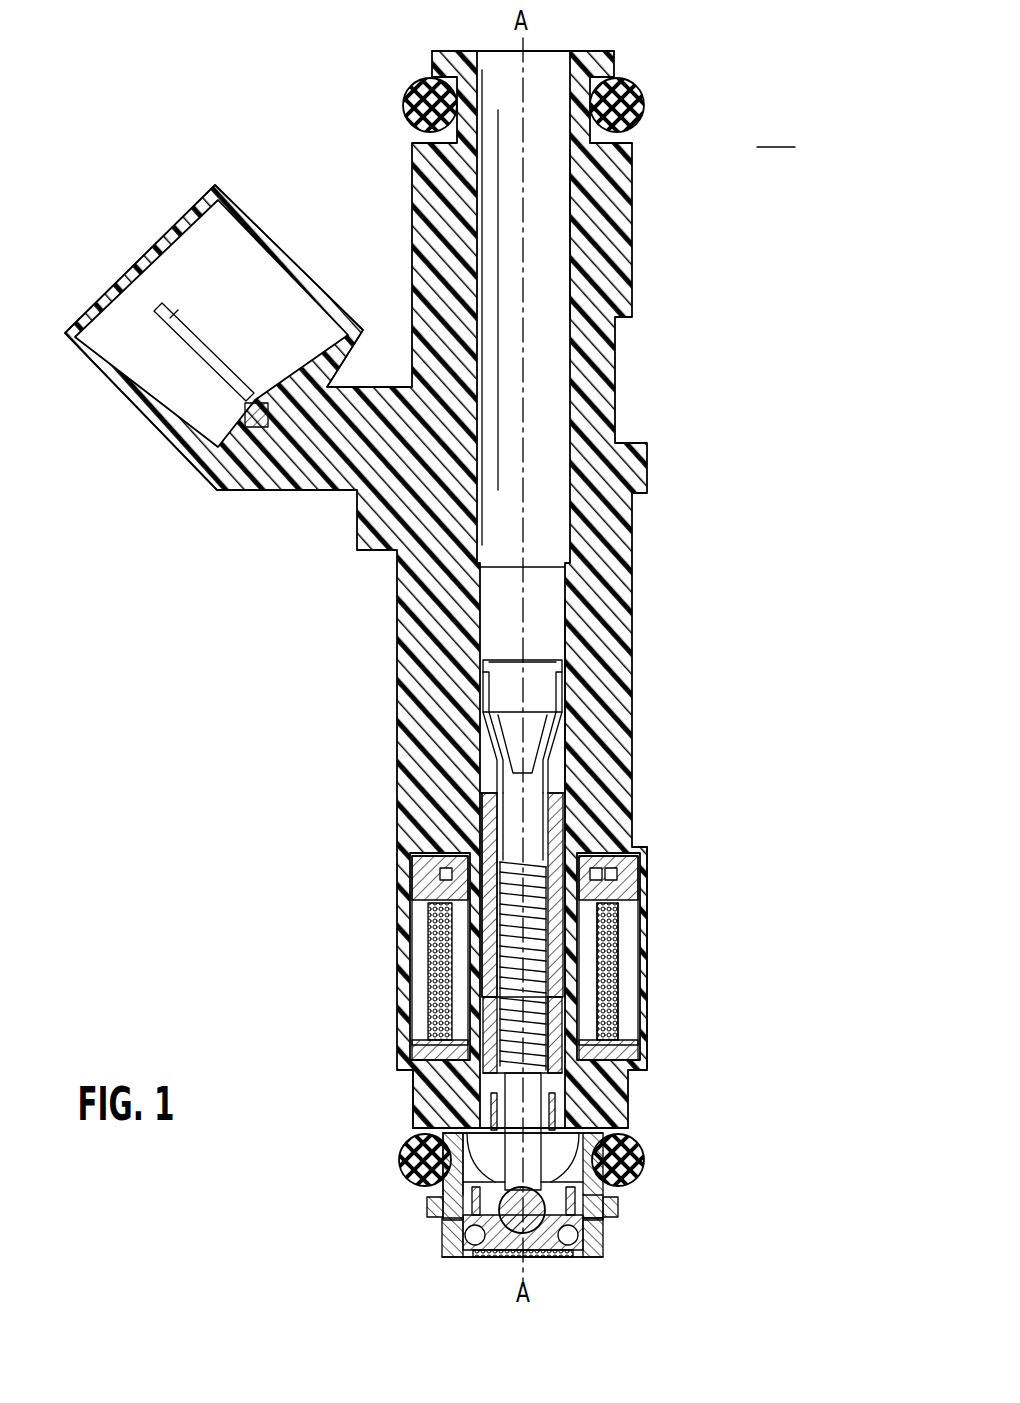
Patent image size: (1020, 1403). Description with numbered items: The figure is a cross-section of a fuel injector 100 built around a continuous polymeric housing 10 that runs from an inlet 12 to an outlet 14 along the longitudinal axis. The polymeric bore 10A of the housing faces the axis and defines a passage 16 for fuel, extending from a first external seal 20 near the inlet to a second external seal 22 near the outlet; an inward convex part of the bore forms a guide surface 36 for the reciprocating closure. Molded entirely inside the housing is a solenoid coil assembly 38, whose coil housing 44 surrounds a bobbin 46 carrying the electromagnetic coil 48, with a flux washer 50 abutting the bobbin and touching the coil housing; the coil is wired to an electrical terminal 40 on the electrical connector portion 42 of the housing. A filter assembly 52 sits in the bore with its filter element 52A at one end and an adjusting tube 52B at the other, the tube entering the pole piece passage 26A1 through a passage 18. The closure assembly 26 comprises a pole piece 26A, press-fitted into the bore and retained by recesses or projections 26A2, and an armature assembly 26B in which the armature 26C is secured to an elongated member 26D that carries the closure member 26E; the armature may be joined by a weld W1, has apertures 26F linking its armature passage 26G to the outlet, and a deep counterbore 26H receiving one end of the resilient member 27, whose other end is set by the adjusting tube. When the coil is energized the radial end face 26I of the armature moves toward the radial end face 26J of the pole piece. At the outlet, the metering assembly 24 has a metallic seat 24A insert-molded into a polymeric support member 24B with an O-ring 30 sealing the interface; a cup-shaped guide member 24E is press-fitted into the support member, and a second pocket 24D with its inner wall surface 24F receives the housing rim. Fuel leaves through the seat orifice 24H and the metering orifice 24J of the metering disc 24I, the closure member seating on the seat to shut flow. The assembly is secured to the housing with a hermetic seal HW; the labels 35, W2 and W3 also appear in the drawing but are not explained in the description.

The fuel injector 100 is at (776, 131).
The polymeric housing 10 is at (409, 589).
The polymeric bore 10A is at (676, 117).
The inlet 12 is at (570, 25).
The outlet 14 is at (562, 1285).
The passage 16 is at (632, 235).
The passage 18 is at (654, 720).
The first external seal 20 is at (575, 88).
The second external seal 22 is at (448, 1158).
The metering assembly 24 is at (447, 1195).
The seat 24A is at (440, 1265).
The polymeric support member 24B is at (424, 1232).
The second pocket 24D is at (468, 1214).
The cup-shaped guide member 24E is at (353, 1133).
The inner wall surface 24F is at (368, 1152).
The seat orifice 24H is at (570, 1285).
The metering disc 24I is at (494, 1285).
The metering orifice 24J is at (432, 1285).
The closure assembly 26 is at (417, 950).
The pole piece 26A is at (417, 895).
The pole piece passage 26A1 is at (367, 885).
The recesses or projections 26A2 is at (381, 895).
The armature assembly 26B is at (416, 1020).
The armature 26C is at (634, 1061).
The elongated member 26D is at (607, 1149).
The closure member 26E is at (646, 1241).
The aperture 26F is at (328, 1082).
The armature passage 26G is at (601, 1131).
The counterbore 26H is at (644, 1035).
The radial end face 26I is at (665, 971).
The radial end face 26J is at (608, 880).
The resilient member 27 is at (600, 795).
The O-ring 30 is at (634, 1198).
The coil outer surface 35 is at (695, 971).
The guide surface 36 is at (440, 966).
The solenoid coil assembly 38 is at (597, 971).
The electrical terminal 40 is at (226, 443).
The electrical connector portion 42 is at (214, 376).
The coil housing 44 is at (454, 1033).
The bobbin 46 is at (423, 882).
The electromagnetic coil 48 is at (710, 935).
The flux washer 50 is at (656, 877).
The filter assembly 52 is at (620, 641).
The filter element 52A is at (593, 624).
The adjusting tube 52B is at (423, 752).
The weld W1 is at (604, 1110).
The second weld W2 is at (584, 1191).
The third weld W3 is at (622, 1274).
The hermetic seal HW is at (681, 1214).